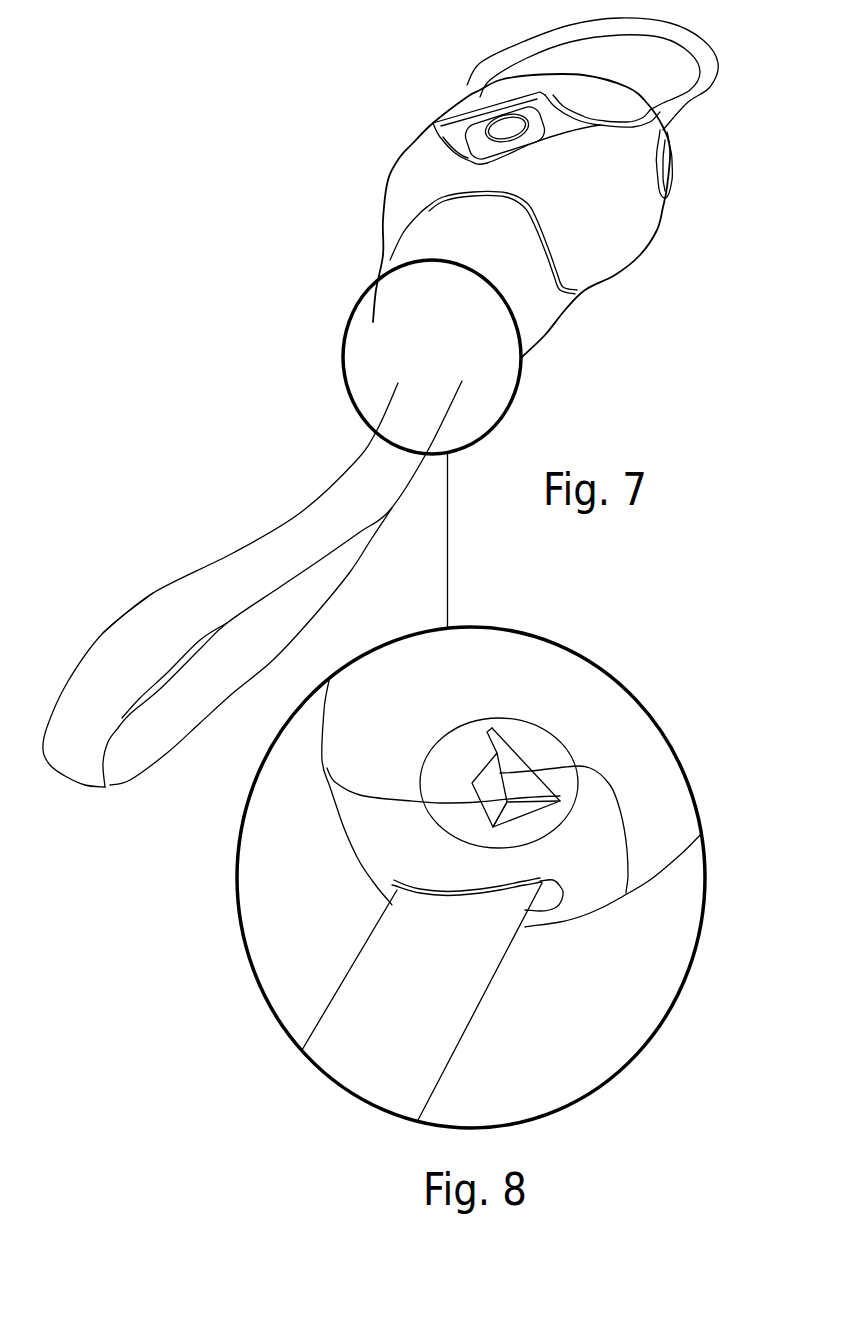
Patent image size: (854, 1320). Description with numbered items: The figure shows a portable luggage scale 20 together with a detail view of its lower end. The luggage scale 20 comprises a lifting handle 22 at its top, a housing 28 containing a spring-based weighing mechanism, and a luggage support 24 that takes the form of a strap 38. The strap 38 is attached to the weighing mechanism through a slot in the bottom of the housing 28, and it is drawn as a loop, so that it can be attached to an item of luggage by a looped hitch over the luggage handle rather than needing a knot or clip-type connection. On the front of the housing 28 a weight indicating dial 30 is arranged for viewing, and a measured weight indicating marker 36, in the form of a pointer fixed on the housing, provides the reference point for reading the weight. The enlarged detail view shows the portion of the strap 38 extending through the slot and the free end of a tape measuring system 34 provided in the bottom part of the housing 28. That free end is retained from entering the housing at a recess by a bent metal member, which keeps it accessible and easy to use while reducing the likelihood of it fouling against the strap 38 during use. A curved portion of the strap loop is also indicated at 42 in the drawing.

In FIG. 7, the portable luggage scale 20 is at (612, 368).
In FIG. 7, the lifting handle 22 is at (710, 63).
In FIG. 7, the luggage support 24 is at (195, 560).
In FIG. 7, the housing 28 is at (382, 227).
In FIG. 7, the weight indicating dial 30 is at (613, 110).
In FIG. 8, the tape measuring system 34 is at (487, 783).
In FIG. 7, the measured weight indicating marker 36 is at (533, 97).
In FIG. 7, the strap 38 is at (142, 627).
In FIG. 8, the strap 38 is at (357, 1075).
In FIG. 7, the loop end 42 is at (148, 752).